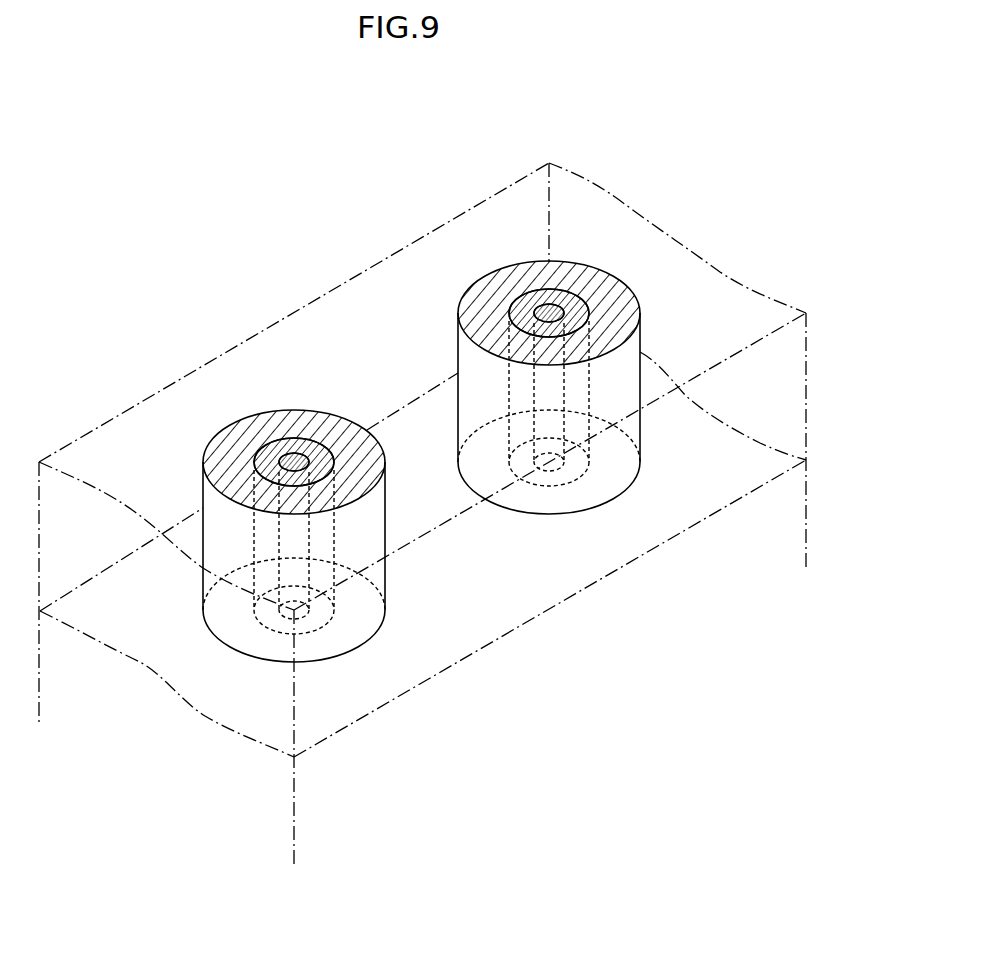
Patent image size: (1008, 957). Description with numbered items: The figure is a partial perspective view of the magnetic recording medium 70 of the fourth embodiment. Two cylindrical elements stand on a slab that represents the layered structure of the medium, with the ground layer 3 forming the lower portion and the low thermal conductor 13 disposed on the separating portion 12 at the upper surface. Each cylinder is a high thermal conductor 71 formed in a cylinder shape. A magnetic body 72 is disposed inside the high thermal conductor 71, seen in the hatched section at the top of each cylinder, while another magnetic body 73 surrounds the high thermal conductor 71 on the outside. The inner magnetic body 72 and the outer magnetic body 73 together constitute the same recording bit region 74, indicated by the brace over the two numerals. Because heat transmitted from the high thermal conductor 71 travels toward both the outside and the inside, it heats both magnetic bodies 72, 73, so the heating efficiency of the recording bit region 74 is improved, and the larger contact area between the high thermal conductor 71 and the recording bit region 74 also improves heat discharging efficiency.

The magnetic recording medium 70 is at (732, 182).
The ground layer 3 is at (793, 526).
The low thermal conductor 13 is at (793, 396).
The separating portion 12 is at (469, 386).
The high thermal conductor 71 is at (265, 458).
The magnetic body 72 is at (288, 460).
The magnetic body 73 is at (293, 425).
The recording bit region 74 is at (203, 282).